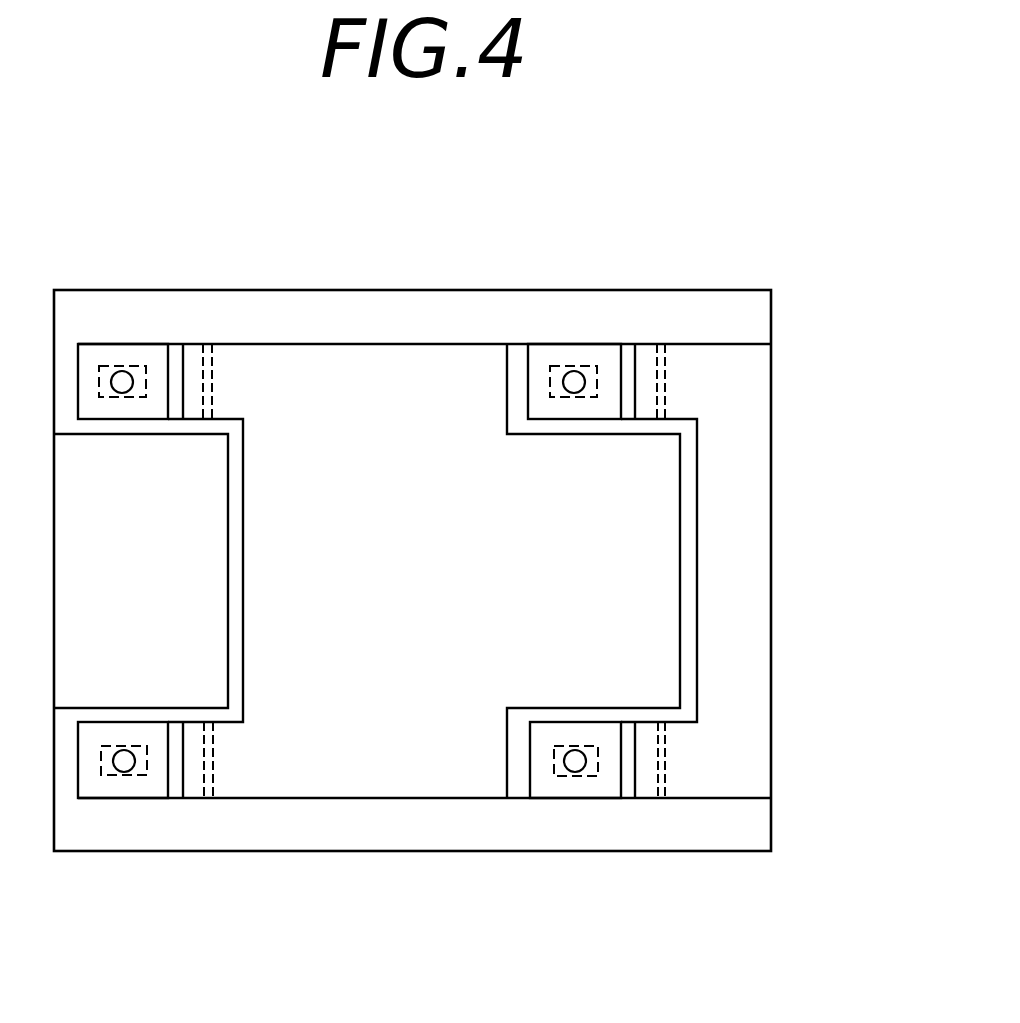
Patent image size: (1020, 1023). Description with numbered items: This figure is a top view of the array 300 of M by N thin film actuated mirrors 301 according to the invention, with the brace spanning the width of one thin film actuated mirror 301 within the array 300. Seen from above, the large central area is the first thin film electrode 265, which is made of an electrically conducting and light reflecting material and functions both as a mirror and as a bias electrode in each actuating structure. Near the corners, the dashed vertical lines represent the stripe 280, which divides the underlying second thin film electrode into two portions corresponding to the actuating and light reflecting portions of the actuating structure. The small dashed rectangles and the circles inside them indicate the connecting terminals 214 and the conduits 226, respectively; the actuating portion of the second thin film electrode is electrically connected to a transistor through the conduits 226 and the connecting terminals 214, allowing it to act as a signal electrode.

The array of M×N thin film actuated mirrors 300 is at (777, 126).
The thin film actuated mirror 301 is at (696, 237).
The first thin film electrode 265 is at (627, 585).
The stripe 280 is at (210, 787).
The connecting terminals 214 is at (142, 775).
The conduits 226 is at (124, 761).